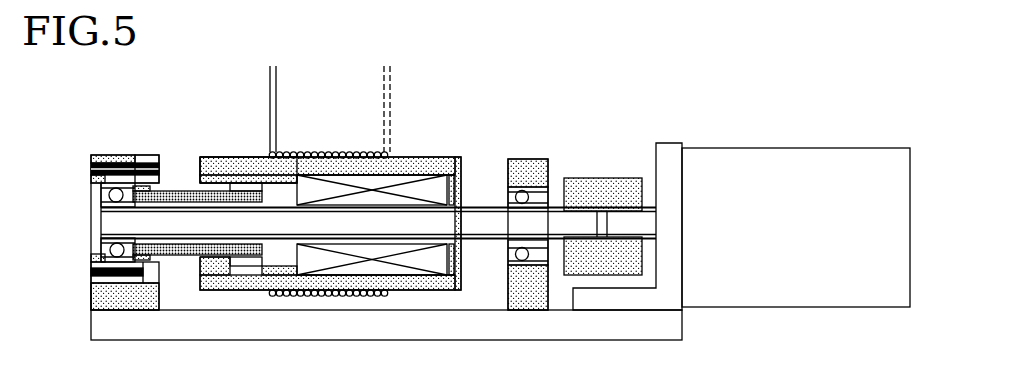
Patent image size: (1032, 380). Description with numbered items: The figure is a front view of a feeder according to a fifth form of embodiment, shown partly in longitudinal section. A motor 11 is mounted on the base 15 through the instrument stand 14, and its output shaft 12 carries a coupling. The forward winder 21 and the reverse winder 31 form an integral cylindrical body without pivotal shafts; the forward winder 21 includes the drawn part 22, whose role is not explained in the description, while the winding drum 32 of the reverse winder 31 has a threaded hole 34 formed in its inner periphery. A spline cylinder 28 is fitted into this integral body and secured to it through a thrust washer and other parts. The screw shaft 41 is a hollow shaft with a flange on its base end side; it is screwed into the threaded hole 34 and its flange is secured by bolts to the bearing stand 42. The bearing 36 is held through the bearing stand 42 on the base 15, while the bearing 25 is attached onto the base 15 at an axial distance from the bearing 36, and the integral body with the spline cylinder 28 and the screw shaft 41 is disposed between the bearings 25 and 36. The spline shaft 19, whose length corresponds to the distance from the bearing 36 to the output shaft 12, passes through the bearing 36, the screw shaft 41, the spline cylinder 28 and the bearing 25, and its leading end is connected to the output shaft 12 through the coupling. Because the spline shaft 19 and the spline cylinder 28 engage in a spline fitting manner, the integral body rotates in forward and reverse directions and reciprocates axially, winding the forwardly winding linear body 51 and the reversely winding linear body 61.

The motor 11 is at (712, 177).
The output shaft 12 is at (630, 223).
The instrument stand 14 is at (586, 298).
The base 15 is at (270, 323).
The spline shaft 19 is at (420, 222).
The forward winder 21 is at (444, 157).
The yoke 22 is at (410, 167).
The bearing 25 is at (523, 190).
The spline cylinder 28 is at (367, 265).
The reverse winder 31 is at (206, 156).
The winding drum 32 is at (245, 160).
The threaded hole 34 is at (222, 254).
The bearing 36 is at (113, 183).
The screw shaft 41 is at (181, 190).
The bearing stand 42 is at (112, 300).
The forwardly winding linear body 51 is at (388, 132).
The reversely winding linear body 61 is at (273, 120).